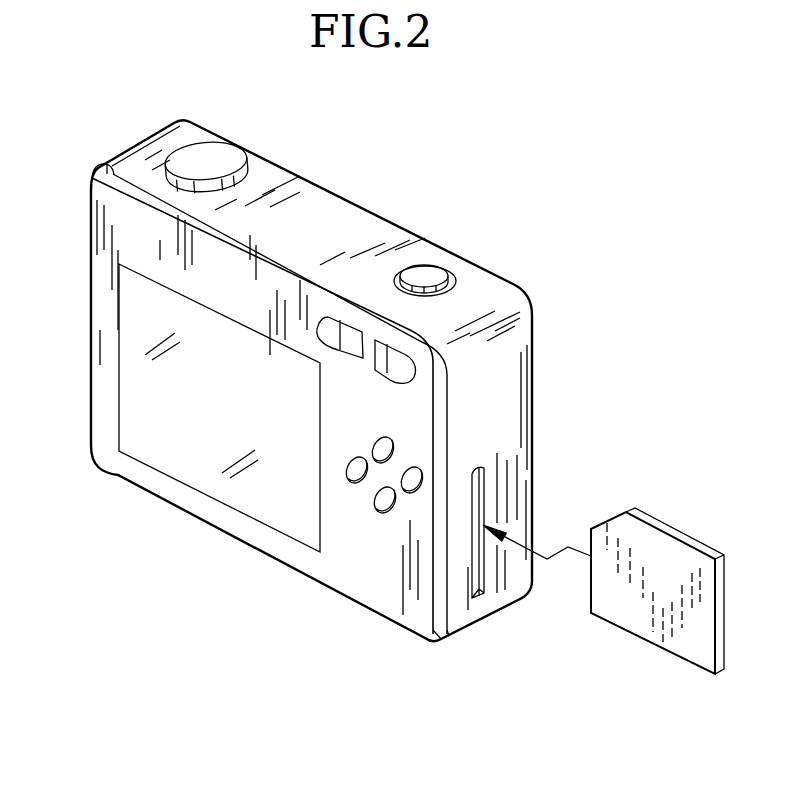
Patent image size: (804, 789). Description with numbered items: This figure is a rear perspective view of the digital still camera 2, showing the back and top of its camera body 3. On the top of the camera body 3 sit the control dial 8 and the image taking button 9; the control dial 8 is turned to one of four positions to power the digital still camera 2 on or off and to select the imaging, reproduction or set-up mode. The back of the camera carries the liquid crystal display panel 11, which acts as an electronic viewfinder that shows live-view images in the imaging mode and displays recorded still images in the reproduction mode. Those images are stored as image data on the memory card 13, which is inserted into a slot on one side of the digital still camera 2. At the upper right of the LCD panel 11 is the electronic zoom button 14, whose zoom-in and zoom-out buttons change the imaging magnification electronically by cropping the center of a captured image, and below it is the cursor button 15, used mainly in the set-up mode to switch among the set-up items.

The digital still camera 2 is at (328, 156).
The camera body 3 is at (345, 221).
The control dial 8 is at (424, 278).
The image taking button 9 is at (204, 162).
The liquid crystal display (LCD) panel 11 is at (167, 375).
The memory card 13 is at (643, 612).
The electronic zoom button 14 is at (352, 342).
The cursor button 15 is at (380, 503).